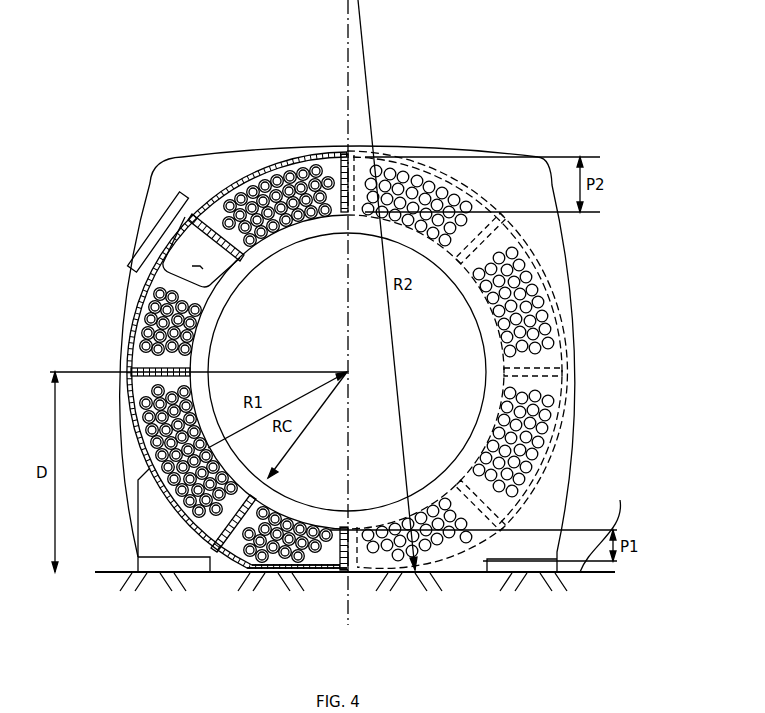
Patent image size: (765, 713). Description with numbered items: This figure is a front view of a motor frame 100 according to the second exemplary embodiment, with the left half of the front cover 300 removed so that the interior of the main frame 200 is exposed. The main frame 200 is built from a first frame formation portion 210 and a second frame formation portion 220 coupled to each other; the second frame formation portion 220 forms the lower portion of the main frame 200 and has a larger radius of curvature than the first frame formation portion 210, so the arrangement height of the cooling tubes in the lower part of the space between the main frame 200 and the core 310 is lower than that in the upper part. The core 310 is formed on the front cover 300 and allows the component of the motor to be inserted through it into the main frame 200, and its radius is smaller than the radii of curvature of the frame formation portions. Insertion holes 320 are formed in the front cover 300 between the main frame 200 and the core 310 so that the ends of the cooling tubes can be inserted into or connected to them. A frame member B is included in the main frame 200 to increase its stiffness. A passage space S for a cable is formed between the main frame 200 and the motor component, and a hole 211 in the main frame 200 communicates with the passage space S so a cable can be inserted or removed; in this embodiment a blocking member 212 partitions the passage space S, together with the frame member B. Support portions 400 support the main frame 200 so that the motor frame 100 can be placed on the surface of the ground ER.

The motor frame 100 is at (236, 36).
The main frame 200 is at (262, 163).
The first frame formation portion 210 is at (212, 188).
The hole 211 is at (147, 218).
The blocking member 212 is at (165, 255).
The second frame formation portion 220 is at (302, 575).
The front cover 300 is at (507, 152).
The core 310 is at (403, 257).
The insertion holes 320 is at (405, 176).
The support portions 400 is at (135, 555).
The frame member B is at (255, 235).
The passage space S is at (192, 266).
The surface of the ground ER is at (602, 525).